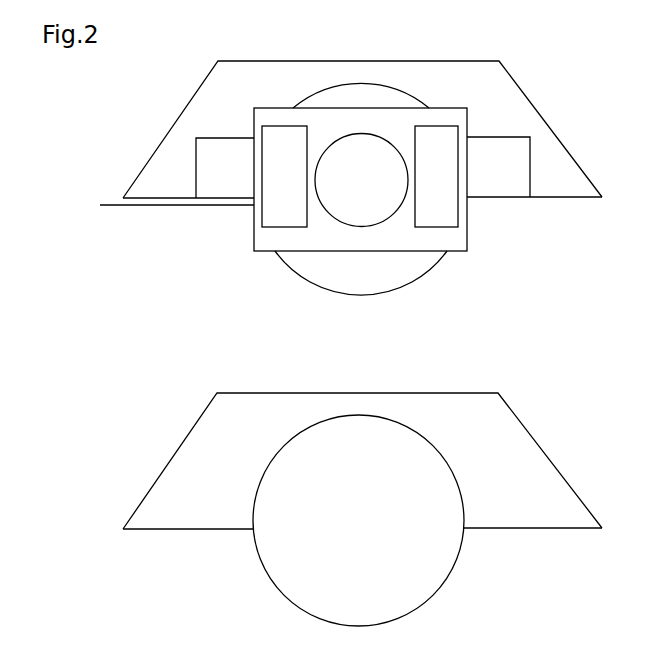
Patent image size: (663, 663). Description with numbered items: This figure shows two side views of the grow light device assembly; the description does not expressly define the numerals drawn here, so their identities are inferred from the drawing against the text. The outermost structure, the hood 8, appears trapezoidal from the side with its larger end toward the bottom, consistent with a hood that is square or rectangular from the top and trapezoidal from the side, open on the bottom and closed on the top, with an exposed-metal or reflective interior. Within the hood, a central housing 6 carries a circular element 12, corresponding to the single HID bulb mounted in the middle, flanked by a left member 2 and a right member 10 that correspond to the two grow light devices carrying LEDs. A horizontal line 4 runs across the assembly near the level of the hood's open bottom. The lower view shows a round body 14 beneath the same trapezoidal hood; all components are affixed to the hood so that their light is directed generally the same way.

The left side member 2 is at (187, 168).
The connecting line 4 is at (171, 206).
The housing frame 6 is at (247, 233).
The trapezoidal base 8 is at (520, 82).
The right side member 10 is at (402, 204).
The circular opening 12 is at (360, 182).
The cylindrical body 14 is at (455, 563).